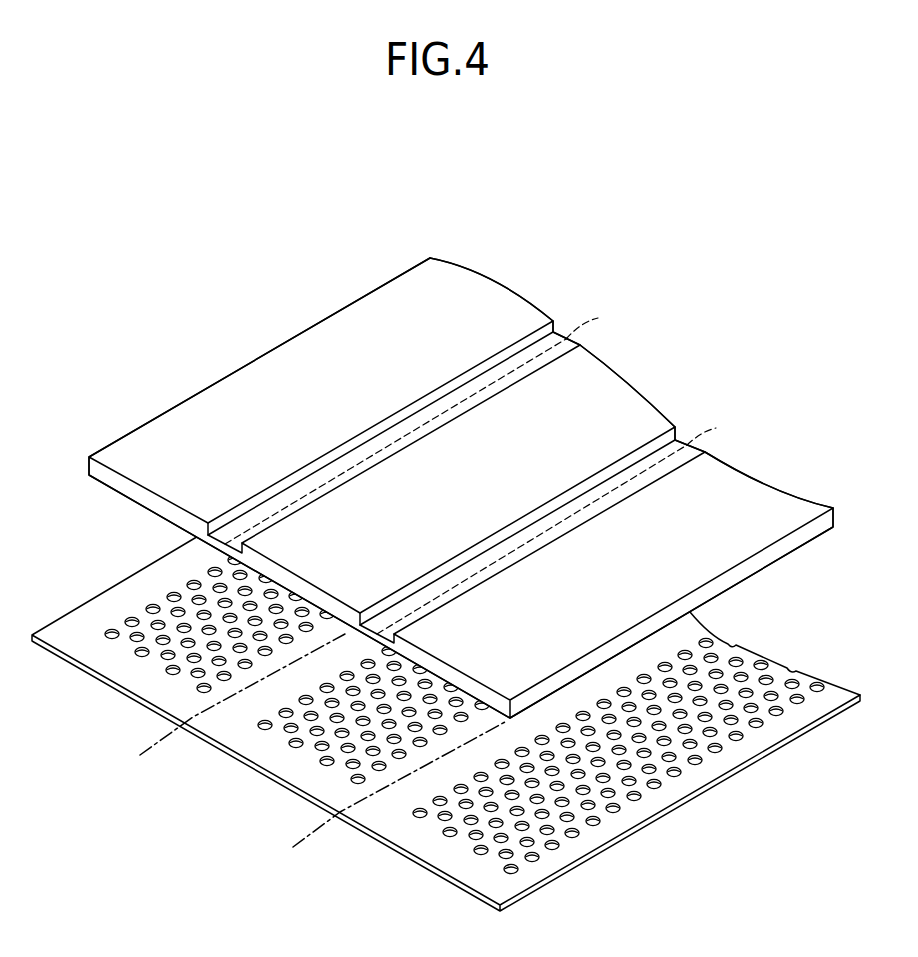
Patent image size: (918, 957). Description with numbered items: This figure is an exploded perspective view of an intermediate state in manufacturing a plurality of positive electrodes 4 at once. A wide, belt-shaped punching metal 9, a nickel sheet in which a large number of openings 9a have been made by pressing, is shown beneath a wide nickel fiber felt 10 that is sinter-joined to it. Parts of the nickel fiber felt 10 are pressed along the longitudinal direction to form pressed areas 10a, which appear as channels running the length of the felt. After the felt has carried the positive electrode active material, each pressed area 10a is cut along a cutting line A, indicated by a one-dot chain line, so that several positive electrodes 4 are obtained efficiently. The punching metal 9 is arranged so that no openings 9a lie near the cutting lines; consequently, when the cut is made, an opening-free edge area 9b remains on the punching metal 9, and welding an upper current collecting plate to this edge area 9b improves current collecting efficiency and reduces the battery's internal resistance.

The positive electrode 4 is at (446, 584).
The punching metal 9 is at (446, 723).
The openings 9a is at (167, 669).
The edge area 9b is at (232, 742).
The nickel fiber felt 10 is at (461, 488).
The pressed areas 10a is at (534, 352).